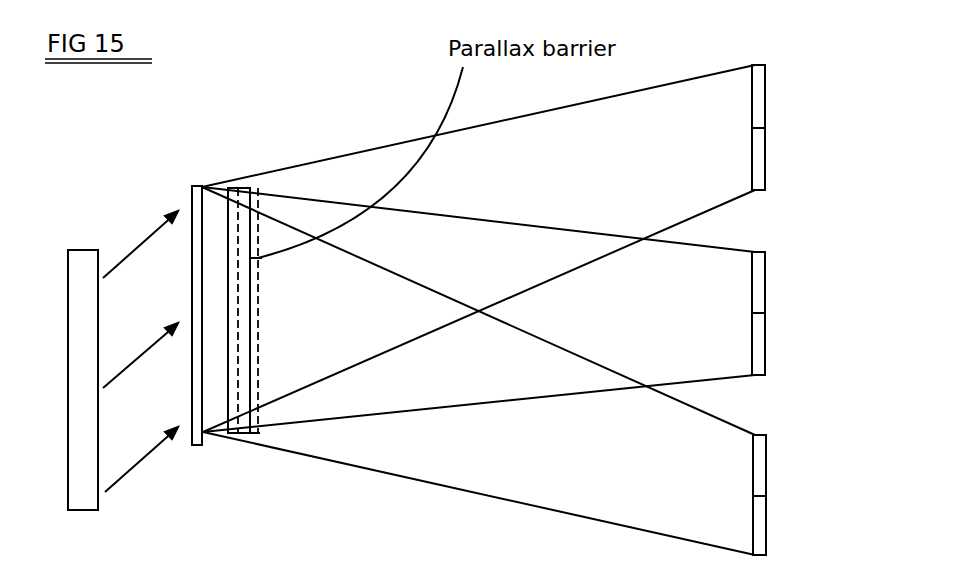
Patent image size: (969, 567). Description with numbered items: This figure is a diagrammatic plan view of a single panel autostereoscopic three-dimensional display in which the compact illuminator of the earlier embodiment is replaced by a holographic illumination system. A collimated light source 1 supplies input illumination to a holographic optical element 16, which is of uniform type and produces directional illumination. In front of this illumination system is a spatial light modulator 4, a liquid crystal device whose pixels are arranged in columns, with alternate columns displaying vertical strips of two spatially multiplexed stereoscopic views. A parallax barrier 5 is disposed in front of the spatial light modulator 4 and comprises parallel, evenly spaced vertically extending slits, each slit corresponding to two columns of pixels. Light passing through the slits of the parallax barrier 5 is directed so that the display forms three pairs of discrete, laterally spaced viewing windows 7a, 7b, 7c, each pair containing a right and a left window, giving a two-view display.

The collimated light source 1 is at (83, 250).
The holographic optical element 16 is at (200, 187).
The spatial light modulator 4 is at (241, 436).
The parallax barrier 5 is at (257, 436).
The viewing window 7a is at (775, 128).
The viewing window 7b is at (775, 313).
The viewing window 7c is at (775, 492).